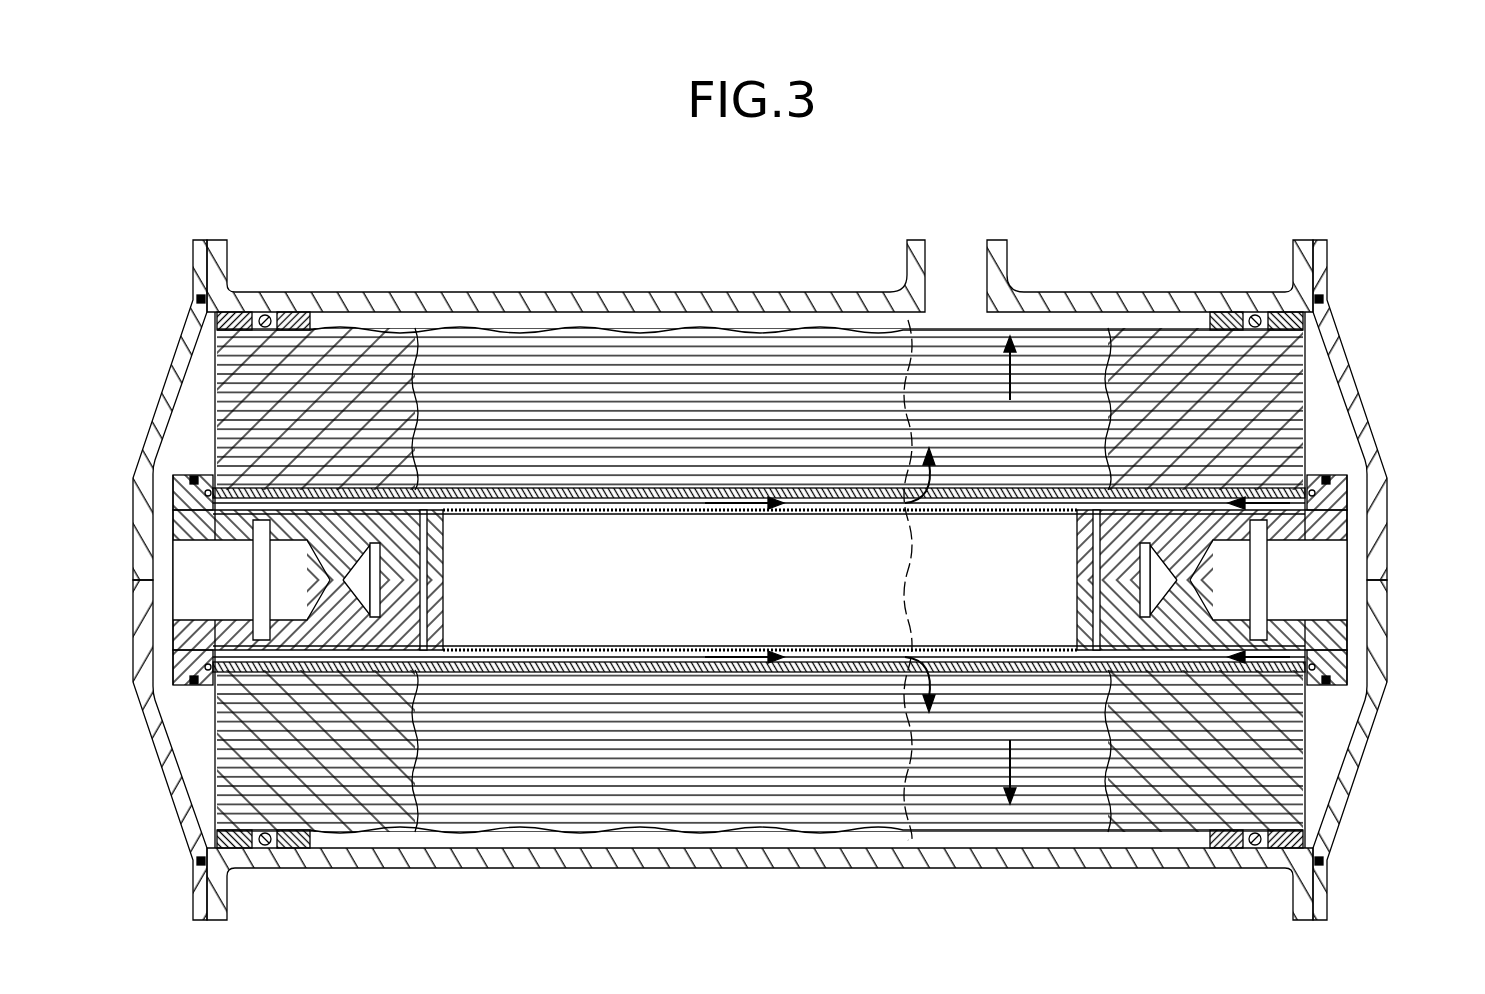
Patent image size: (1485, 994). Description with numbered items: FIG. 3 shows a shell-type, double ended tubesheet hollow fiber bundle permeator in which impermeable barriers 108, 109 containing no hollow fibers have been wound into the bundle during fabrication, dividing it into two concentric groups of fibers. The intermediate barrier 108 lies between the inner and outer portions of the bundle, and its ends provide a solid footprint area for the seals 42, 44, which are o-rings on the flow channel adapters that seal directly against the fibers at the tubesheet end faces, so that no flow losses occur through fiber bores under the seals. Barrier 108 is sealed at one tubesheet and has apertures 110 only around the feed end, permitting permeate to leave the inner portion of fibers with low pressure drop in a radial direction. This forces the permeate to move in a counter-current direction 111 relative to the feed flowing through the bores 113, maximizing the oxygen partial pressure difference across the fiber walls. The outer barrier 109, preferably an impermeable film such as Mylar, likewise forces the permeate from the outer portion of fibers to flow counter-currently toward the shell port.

The o-ring 42 is at (1343, 633).
The o-ring 44 is at (177, 633).
The impermeable barrier 108 is at (855, 490).
The impermeable barrier 109 is at (487, 326).
The apertures 110 is at (1057, 663).
The counter-current direction 111 is at (768, 505).
The bores 113 is at (1240, 498).